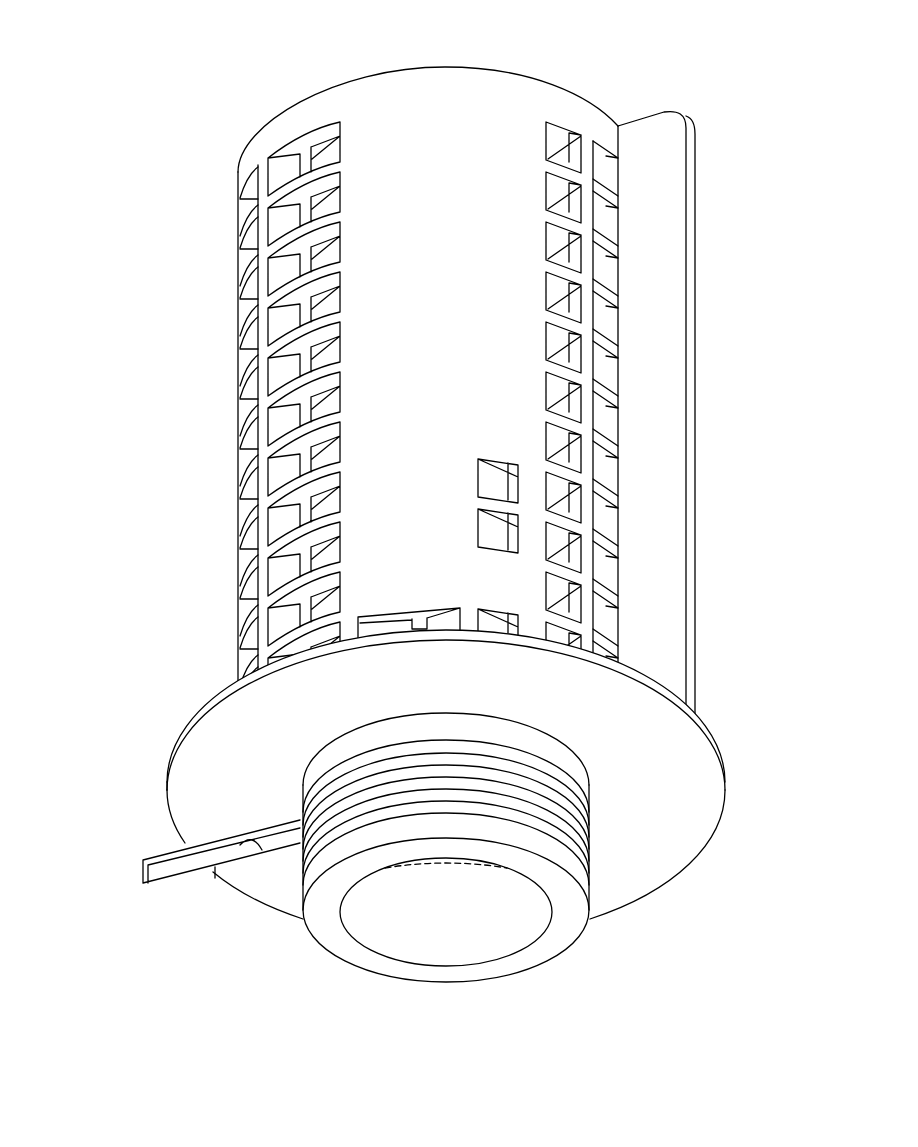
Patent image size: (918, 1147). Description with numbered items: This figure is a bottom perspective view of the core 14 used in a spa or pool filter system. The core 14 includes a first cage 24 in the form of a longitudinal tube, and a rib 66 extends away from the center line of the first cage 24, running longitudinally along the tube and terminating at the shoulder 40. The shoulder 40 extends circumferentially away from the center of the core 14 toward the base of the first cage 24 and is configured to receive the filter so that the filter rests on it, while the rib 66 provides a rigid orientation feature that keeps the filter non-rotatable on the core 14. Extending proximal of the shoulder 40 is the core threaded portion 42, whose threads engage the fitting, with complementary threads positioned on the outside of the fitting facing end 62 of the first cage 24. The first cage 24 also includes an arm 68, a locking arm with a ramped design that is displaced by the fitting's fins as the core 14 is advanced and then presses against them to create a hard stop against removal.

The core 14 is at (160, 125).
The first cage 24 is at (263, 399).
The rib 66 is at (667, 150).
The shoulder 40 is at (688, 764).
The core threaded portion 42 is at (567, 822).
The fitting facing end 62 is at (552, 942).
The arm 68 is at (178, 862).